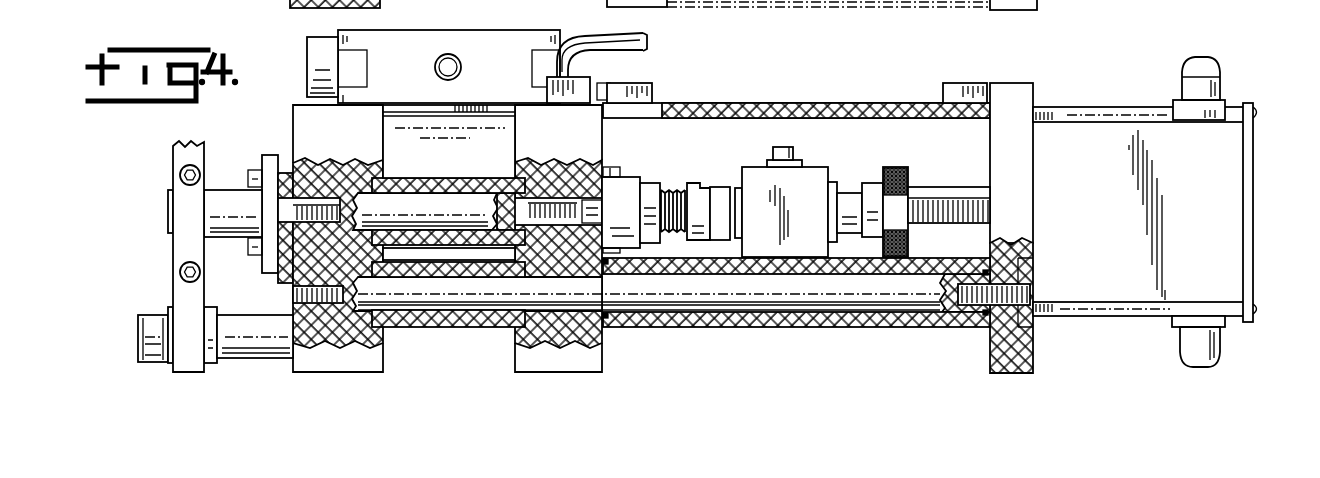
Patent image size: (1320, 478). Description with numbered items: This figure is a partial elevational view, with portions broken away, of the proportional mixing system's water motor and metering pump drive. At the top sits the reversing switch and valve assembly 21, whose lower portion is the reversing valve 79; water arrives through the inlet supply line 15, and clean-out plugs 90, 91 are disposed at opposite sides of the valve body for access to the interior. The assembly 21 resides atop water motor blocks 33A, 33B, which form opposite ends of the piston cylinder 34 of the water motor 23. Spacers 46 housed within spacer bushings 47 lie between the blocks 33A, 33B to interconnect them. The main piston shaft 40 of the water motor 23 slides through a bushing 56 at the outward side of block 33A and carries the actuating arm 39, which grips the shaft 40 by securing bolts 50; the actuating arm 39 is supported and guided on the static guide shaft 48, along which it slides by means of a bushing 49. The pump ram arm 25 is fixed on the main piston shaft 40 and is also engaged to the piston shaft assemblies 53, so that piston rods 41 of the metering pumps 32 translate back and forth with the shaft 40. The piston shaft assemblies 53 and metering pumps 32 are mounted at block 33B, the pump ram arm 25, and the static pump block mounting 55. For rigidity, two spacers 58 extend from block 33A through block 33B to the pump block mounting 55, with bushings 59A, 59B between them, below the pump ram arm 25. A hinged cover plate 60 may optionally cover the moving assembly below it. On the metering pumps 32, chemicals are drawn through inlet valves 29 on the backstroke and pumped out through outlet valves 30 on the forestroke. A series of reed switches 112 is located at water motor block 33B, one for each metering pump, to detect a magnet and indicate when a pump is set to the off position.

The inlet supply line 15 is at (462, 69).
The reversing switch and valve assembly 21 is at (298, 44).
The water motor 23 is at (398, 147).
The pump ram arm 25 is at (818, 177).
The inlet valve 29 is at (1213, 338).
The outlet valve 30 is at (1221, 90).
The metering pump 32 is at (1235, 227).
The water motor block 33A is at (367, 367).
The water motor block 33B is at (597, 350).
The piston cylinder 34 is at (497, 145).
The actuating arm 39 is at (187, 143).
The main piston shaft 40 is at (218, 198).
The piston rod 41 is at (958, 197).
The spacer 46 is at (455, 200).
The spacer bushing 47 is at (447, 198).
The static guide shaft 48 is at (272, 352).
The bushing 49 is at (167, 308).
The securing bolt 50 is at (182, 175).
The piston shaft assembly 53 is at (725, 146).
The pump block mounting 55 is at (1028, 175).
The bushing 56 is at (275, 155).
The spacer 58 is at (852, 300).
The bushing 59A is at (477, 326).
The bushing 59B is at (802, 326).
The hinged cover plate 60 is at (818, 103).
The reversing valve 79 is at (426, 30).
The clean-out plug 90 is at (306, 75).
The clean-out plug 91 is at (588, 38).
The reed switch 112 is at (595, 80).